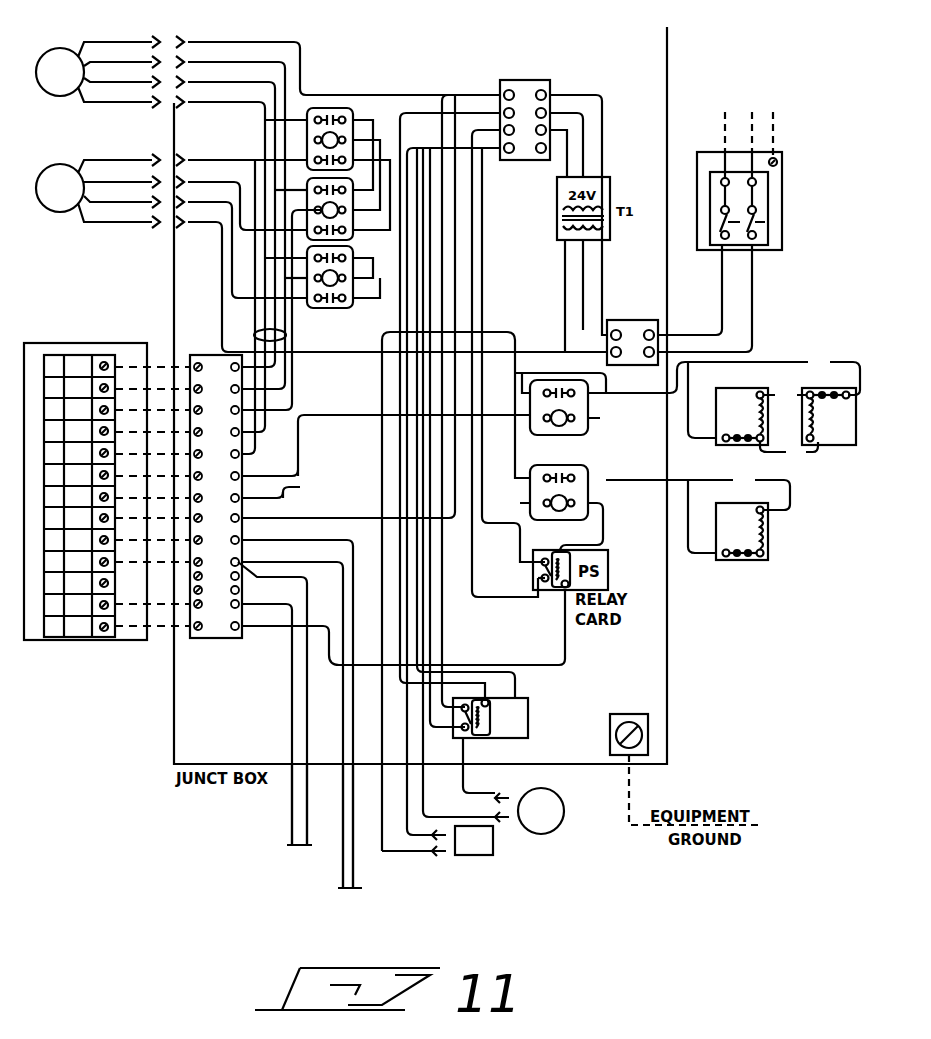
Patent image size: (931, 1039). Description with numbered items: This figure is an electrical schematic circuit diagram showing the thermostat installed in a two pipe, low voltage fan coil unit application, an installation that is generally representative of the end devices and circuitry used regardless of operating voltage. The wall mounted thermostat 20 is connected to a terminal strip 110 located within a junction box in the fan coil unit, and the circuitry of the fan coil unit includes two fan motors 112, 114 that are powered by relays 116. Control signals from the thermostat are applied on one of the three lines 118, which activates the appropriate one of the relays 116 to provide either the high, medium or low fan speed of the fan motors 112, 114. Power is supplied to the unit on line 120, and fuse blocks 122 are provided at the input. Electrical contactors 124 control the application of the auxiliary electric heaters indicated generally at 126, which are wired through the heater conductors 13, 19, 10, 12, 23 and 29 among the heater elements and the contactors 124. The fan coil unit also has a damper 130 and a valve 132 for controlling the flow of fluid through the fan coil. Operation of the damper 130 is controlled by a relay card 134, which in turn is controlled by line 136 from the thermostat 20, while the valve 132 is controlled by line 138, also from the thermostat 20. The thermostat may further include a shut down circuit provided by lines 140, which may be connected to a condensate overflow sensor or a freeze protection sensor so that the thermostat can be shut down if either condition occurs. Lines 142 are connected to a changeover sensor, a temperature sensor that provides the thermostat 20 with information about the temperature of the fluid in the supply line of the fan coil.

The fan motor 114 is at (60, 48).
The fan motor 112 is at (60, 164).
The relays 116 is at (372, 246).
The lines 118 is at (287, 336).
The fuse blocks 122 is at (538, 80).
The line 120 is at (722, 140).
The electrical contactors 124 is at (598, 462).
The heater wire 13 is at (724, 375).
The heater wire 19 is at (698, 400).
The heater wire 10 is at (785, 395).
The heater wire 12 is at (789, 451).
The heater wire 23 is at (698, 492).
The heater wire 29 is at (698, 516).
The auxiliary electric heaters 126 is at (813, 500).
The thermostat 20 is at (68, 662).
The terminal strip 110 is at (197, 640).
The line 138 is at (303, 501).
The line 136 is at (355, 502).
The relay card 134 is at (530, 705).
The lines 142 is at (292, 805).
The lines 140 is at (347, 856).
The valve 132 is at (482, 856).
The damper 130 is at (535, 830).